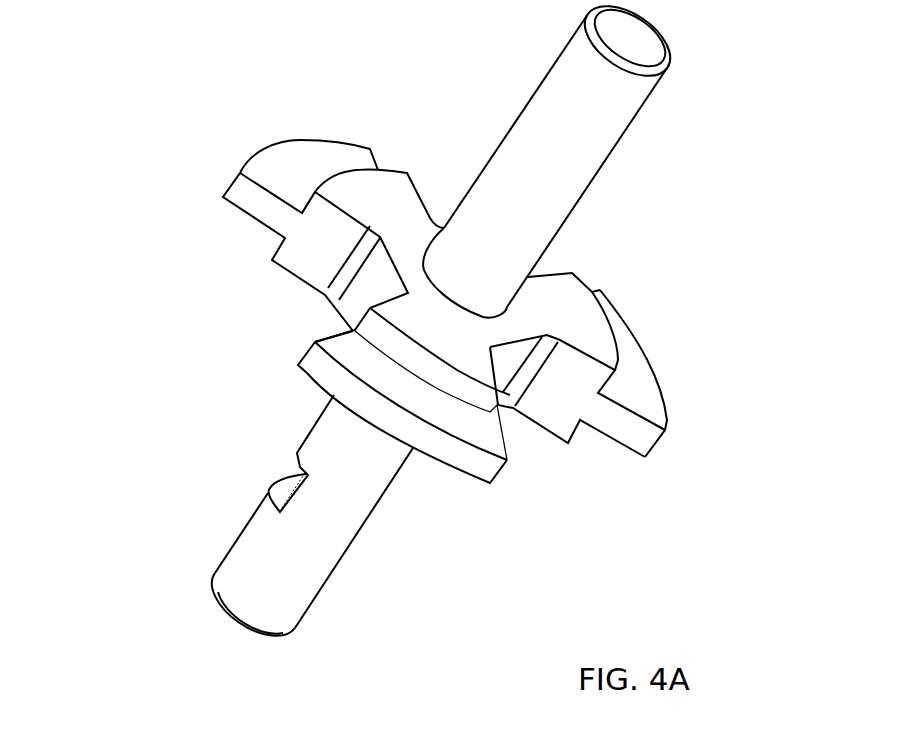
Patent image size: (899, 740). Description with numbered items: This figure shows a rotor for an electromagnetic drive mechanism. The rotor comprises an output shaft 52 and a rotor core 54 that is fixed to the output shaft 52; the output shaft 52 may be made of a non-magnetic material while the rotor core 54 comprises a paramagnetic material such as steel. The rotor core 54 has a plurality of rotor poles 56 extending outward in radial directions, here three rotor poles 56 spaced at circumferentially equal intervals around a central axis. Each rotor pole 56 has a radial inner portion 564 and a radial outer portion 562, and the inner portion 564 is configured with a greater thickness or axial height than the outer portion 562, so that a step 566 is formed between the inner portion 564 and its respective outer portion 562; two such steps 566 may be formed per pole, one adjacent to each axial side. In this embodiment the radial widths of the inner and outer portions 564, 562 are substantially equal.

The output shaft 52 is at (555, 168).
The rotor core 54 is at (363, 292).
The rotor pole 56 is at (576, 406).
The radial outer portion 562 is at (630, 388).
The radial inner portion 564 is at (577, 328).
The step 566 is at (448, 385).